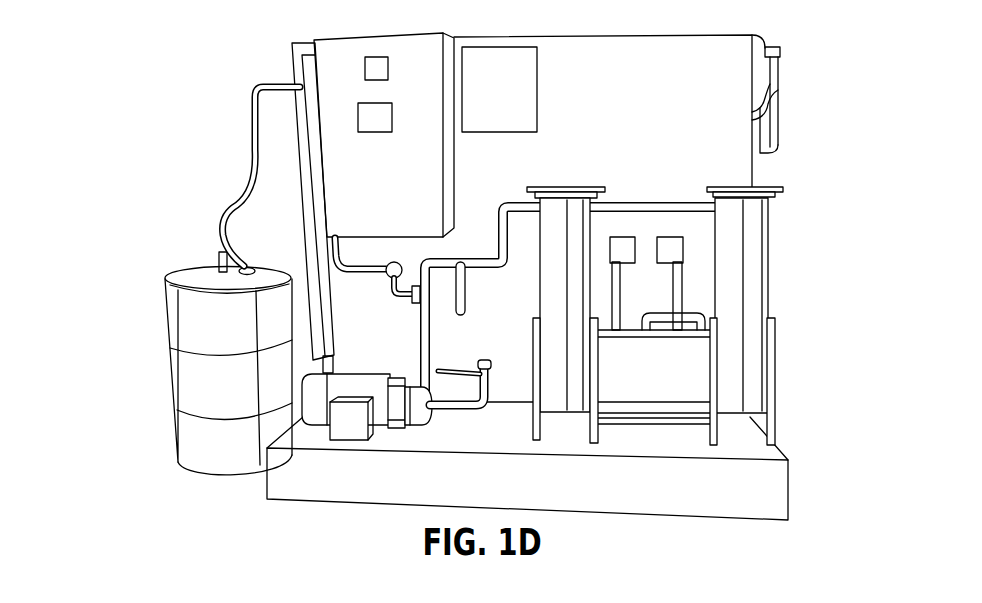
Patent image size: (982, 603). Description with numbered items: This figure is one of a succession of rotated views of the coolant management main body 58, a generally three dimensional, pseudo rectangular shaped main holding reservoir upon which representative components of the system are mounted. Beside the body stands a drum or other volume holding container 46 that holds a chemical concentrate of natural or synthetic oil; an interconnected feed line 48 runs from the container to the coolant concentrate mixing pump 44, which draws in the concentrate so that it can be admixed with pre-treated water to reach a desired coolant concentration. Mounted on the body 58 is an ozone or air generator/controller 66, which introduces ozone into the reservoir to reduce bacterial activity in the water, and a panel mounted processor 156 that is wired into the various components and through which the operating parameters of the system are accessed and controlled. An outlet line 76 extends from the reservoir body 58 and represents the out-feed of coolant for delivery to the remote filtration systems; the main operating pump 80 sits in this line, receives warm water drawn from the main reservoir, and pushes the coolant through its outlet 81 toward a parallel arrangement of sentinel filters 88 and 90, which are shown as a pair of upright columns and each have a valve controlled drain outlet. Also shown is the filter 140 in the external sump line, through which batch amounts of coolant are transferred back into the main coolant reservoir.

The coolant concentrate mixing pump 44 is at (292, 63).
The drum or volume holding container 46 is at (180, 384).
The feed line 48 is at (258, 153).
The three dimensional body 58 is at (629, 114).
The generator/controller 66 is at (488, 96).
The outlet line 76 is at (455, 414).
The main operating pump 80 is at (318, 430).
The outlet 81 is at (423, 320).
The sentinel filter 88 is at (552, 204).
The sentinel filter 90 is at (753, 283).
The filter 140 is at (775, 137).
The panel mounted processor 156 is at (398, 197).